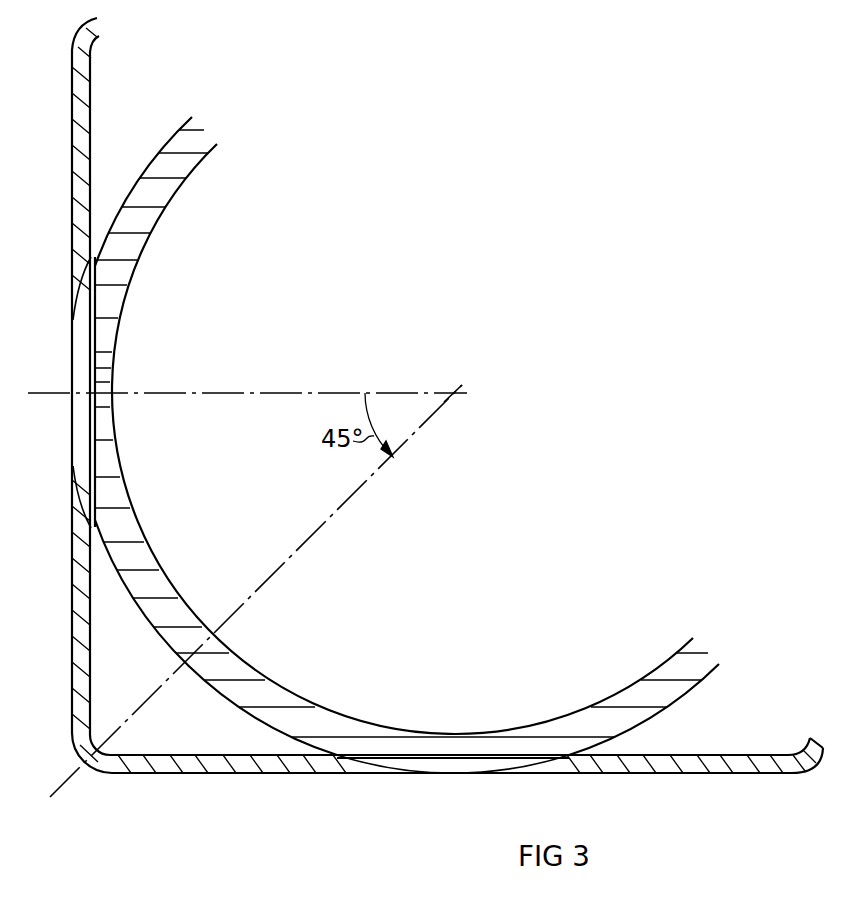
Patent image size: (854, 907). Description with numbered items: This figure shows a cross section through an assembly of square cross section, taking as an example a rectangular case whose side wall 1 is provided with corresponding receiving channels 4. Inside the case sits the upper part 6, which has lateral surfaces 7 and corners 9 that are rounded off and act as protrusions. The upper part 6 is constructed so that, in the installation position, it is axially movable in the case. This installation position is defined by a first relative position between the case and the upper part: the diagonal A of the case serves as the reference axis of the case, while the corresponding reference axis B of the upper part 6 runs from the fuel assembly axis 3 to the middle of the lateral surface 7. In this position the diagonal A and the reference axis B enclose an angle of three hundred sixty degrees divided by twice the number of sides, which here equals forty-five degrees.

The side wall 1 is at (82, 150).
The fuel assembly axis 3 is at (453, 393).
The receiving channel 4 is at (80, 446).
The upper part 6 is at (153, 208).
The lateral surface 7 is at (106, 368).
The corner 9 is at (176, 153).
The diagonal A is at (256, 604).
The reference axis of the upper part B is at (247, 379).